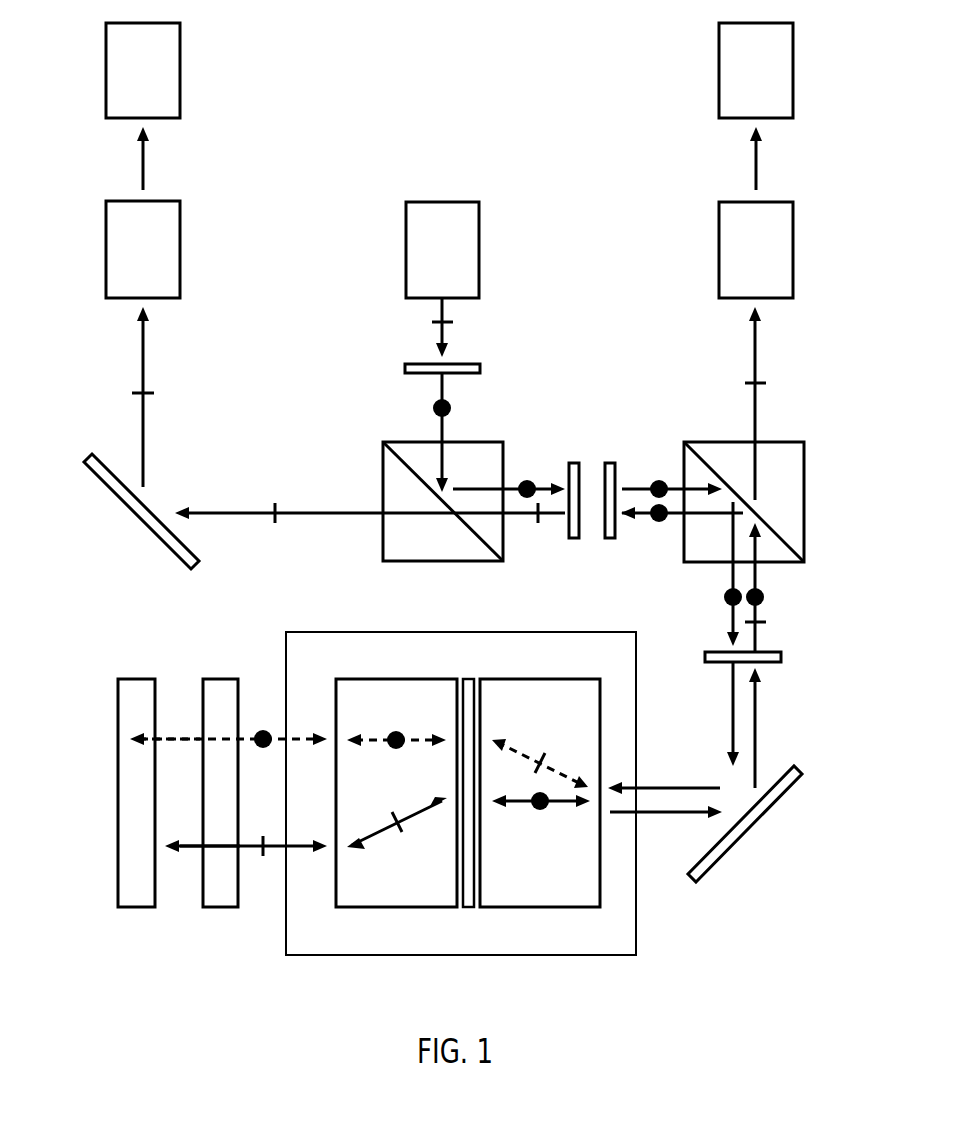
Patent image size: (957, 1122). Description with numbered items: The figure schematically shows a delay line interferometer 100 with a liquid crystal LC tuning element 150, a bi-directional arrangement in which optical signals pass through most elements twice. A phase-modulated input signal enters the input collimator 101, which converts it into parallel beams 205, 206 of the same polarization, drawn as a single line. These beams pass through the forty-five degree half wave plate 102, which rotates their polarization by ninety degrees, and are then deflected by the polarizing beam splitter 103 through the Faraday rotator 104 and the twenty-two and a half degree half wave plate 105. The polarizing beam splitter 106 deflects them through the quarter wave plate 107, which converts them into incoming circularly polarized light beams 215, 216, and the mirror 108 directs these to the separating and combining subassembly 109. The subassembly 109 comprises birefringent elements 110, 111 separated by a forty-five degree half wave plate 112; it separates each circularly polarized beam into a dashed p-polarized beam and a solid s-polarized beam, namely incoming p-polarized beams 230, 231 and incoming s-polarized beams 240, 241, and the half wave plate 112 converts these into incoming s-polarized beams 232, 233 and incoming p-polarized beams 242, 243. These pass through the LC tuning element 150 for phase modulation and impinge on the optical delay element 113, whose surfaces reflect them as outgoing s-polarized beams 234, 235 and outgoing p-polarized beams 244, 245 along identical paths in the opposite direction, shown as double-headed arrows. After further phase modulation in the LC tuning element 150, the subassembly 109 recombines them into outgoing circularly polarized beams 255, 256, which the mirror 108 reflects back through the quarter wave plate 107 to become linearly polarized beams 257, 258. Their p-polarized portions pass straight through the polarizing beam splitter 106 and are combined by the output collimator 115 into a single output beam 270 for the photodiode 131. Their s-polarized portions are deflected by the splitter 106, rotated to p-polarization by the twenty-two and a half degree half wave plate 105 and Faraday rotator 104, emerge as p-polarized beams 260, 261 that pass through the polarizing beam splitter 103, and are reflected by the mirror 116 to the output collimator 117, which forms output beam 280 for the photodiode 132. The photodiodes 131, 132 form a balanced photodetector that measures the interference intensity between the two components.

The delay line interferometer 100 is at (408, 64).
The input collimator 101 is at (425, 262).
The 45 degree half wave plate 102 is at (421, 377).
The polarizing beam splitter 103 is at (444, 562).
The Faraday rotator 104 is at (577, 462).
The 22.5 degree half wave plate 105 is at (613, 461).
The polarizing beam splitter 106 is at (713, 441).
The quarter wave plate 107 is at (703, 655).
The mirror 108 is at (720, 857).
The separating and combining subassembly 109 is at (368, 808).
The birefringent element 110 is at (280, 808).
The birefringent element 111 is at (543, 812).
The 45 degree half wave plate 112 is at (477, 675).
The optical delay element 113 is at (138, 908).
The output collimator 115 is at (739, 262).
The mirror 116 is at (160, 548).
The output collimator 117 is at (126, 261).
The photodiode 131 is at (739, 82).
The photodiode 132 is at (126, 82).
The LC tuning element 150 is at (220, 908).
The parallel beam 205 is at (587, 472).
The parallel beam 206 is at (441, 333).
The incoming circularly polarized light beam 215 is at (673, 728).
The incoming circularly polarized light beam 216 is at (675, 787).
The incoming p-polarized beam 230 is at (540, 740).
The incoming p-polarized beam 231 is at (565, 768).
The incoming s-polarized beam 232 is at (273, 677).
The incoming s-polarized beam 233 is at (425, 738).
The outgoing s-polarized beam 234 is at (150, 687).
The outgoing s-polarized beam 235 is at (150, 687).
The incoming s-polarized beam 240 is at (542, 831).
The incoming s-polarized beam 241 is at (512, 812).
The incoming p-polarized beam 242 is at (306, 904).
The incoming p-polarized beam 243 is at (430, 815).
The outgoing p-polarized beam 244 is at (207, 929).
The outgoing p-polarized beam 245 is at (207, 929).
The outgoing circularly polarized beam 255 is at (731, 795).
The outgoing circularly polarized beam 256 is at (758, 752).
The linearly polarized beam 257 is at (797, 587).
The linearly polarized beam 258 is at (758, 572).
The light beam 260 is at (370, 532).
The p-polarized beam 261 is at (348, 515).
The output beam 270 is at (756, 168).
The output beam 280 is at (143, 180).